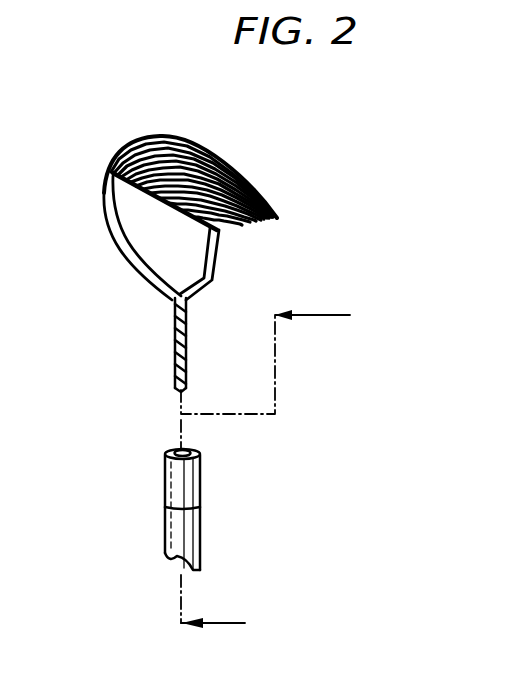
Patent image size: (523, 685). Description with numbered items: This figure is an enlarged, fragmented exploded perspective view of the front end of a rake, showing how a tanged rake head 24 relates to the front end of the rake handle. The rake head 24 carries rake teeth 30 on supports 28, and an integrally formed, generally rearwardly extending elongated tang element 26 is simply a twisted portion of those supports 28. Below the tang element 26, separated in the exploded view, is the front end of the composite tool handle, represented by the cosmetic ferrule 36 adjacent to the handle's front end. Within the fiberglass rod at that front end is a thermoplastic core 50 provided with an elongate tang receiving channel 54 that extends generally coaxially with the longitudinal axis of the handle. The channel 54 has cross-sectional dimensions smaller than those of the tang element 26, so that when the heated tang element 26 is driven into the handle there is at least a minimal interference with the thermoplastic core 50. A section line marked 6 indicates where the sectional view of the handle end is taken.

The tanged rake head 24 is at (170, 168).
The rake teeth 30 is at (250, 192).
The supports 28 is at (120, 246).
The tang element 26 is at (173, 358).
The thermoplastic core 50 is at (181, 497).
The cosmetic ferrule 36 is at (201, 480).
The tang receiving channel 54 is at (193, 452).
The section line 6- 6 is at (265, 474).